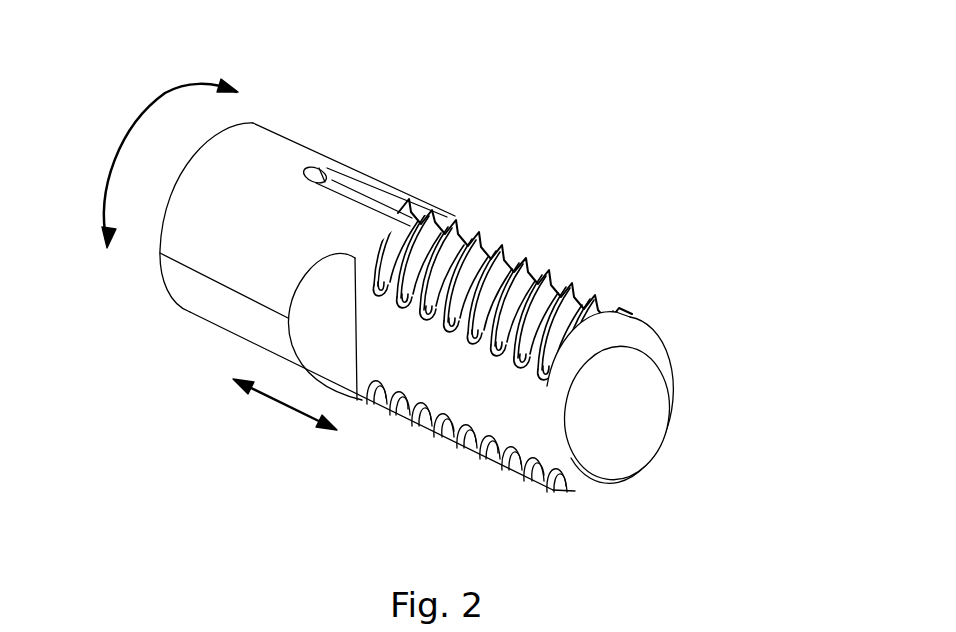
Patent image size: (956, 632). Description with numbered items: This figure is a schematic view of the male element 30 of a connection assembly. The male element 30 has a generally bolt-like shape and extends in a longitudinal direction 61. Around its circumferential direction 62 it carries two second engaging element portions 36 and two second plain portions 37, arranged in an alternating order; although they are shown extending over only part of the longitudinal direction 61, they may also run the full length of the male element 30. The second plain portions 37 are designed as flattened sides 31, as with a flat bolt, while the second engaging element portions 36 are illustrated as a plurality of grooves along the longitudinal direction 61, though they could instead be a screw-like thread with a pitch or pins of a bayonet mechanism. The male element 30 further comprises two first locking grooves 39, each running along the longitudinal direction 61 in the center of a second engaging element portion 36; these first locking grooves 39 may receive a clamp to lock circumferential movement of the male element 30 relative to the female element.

The male element 30 is at (673, 197).
The flattened sides 31 is at (692, 386).
The second engaging element portions 36 is at (634, 298).
The second plain portions 37 is at (517, 410).
The first locking grooves 39 is at (408, 215).
The longitudinal direction 61 is at (273, 410).
The circumferential direction 62 is at (124, 103).